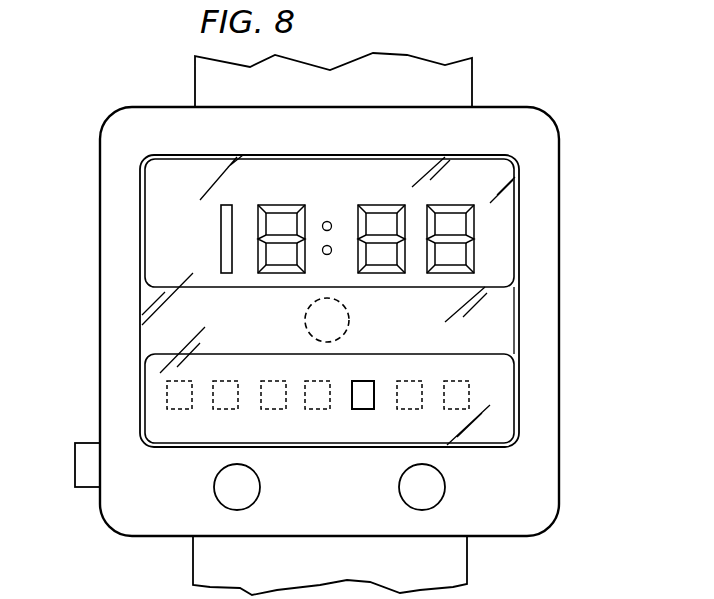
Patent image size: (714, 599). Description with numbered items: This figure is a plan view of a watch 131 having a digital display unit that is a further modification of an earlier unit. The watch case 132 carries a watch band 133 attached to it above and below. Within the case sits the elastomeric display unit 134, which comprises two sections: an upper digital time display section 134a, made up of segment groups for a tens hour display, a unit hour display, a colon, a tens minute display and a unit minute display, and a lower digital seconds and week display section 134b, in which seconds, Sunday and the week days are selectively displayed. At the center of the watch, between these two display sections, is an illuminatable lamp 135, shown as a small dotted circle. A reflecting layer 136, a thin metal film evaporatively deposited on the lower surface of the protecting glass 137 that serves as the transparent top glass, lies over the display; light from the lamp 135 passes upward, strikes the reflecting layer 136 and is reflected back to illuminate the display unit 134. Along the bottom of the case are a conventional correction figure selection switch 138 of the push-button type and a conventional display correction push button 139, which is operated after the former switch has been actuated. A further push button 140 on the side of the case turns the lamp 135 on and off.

The watch 131 is at (508, 100).
The watch case 132 is at (545, 162).
The watch band 133 is at (467, 571).
The elastomeric display unit 134 is at (152, 190).
The digital time display section 134a is at (500, 253).
The digital seconds and week display section 134b is at (498, 417).
The illuminatable lamp 135 is at (350, 321).
The reflecting layer 136 is at (498, 327).
The protecting glass 137 is at (156, 245).
The correction figure selection switch 138 is at (214, 490).
The display correction push button 139 is at (432, 486).
The push button 140 is at (86, 450).